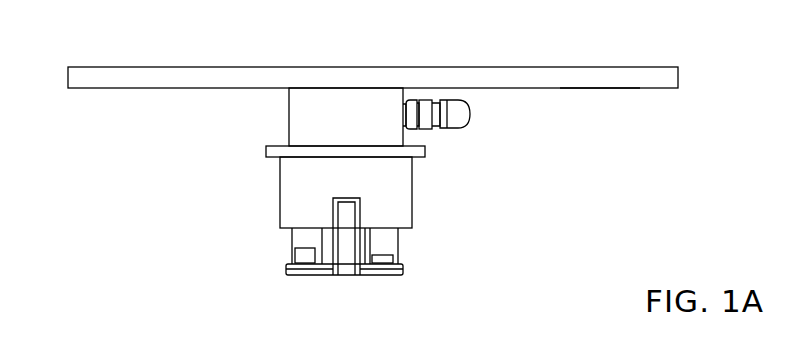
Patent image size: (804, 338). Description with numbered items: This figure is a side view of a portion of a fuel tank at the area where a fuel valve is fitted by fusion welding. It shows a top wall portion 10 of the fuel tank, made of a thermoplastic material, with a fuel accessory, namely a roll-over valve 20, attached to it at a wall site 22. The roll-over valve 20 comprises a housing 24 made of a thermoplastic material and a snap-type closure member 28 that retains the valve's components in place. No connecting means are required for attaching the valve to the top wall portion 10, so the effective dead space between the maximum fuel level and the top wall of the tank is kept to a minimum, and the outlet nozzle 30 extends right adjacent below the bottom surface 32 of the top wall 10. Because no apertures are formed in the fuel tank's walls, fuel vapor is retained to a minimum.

The top wall portion 10 is at (108, 80).
The roll-over valve 20 is at (207, 218).
The wall site 22 is at (289, 88).
The housing 24 is at (393, 188).
The snap-type closure member 28 is at (388, 242).
The outlet nozzle 30 is at (453, 123).
The bottom surface 32 is at (579, 89).